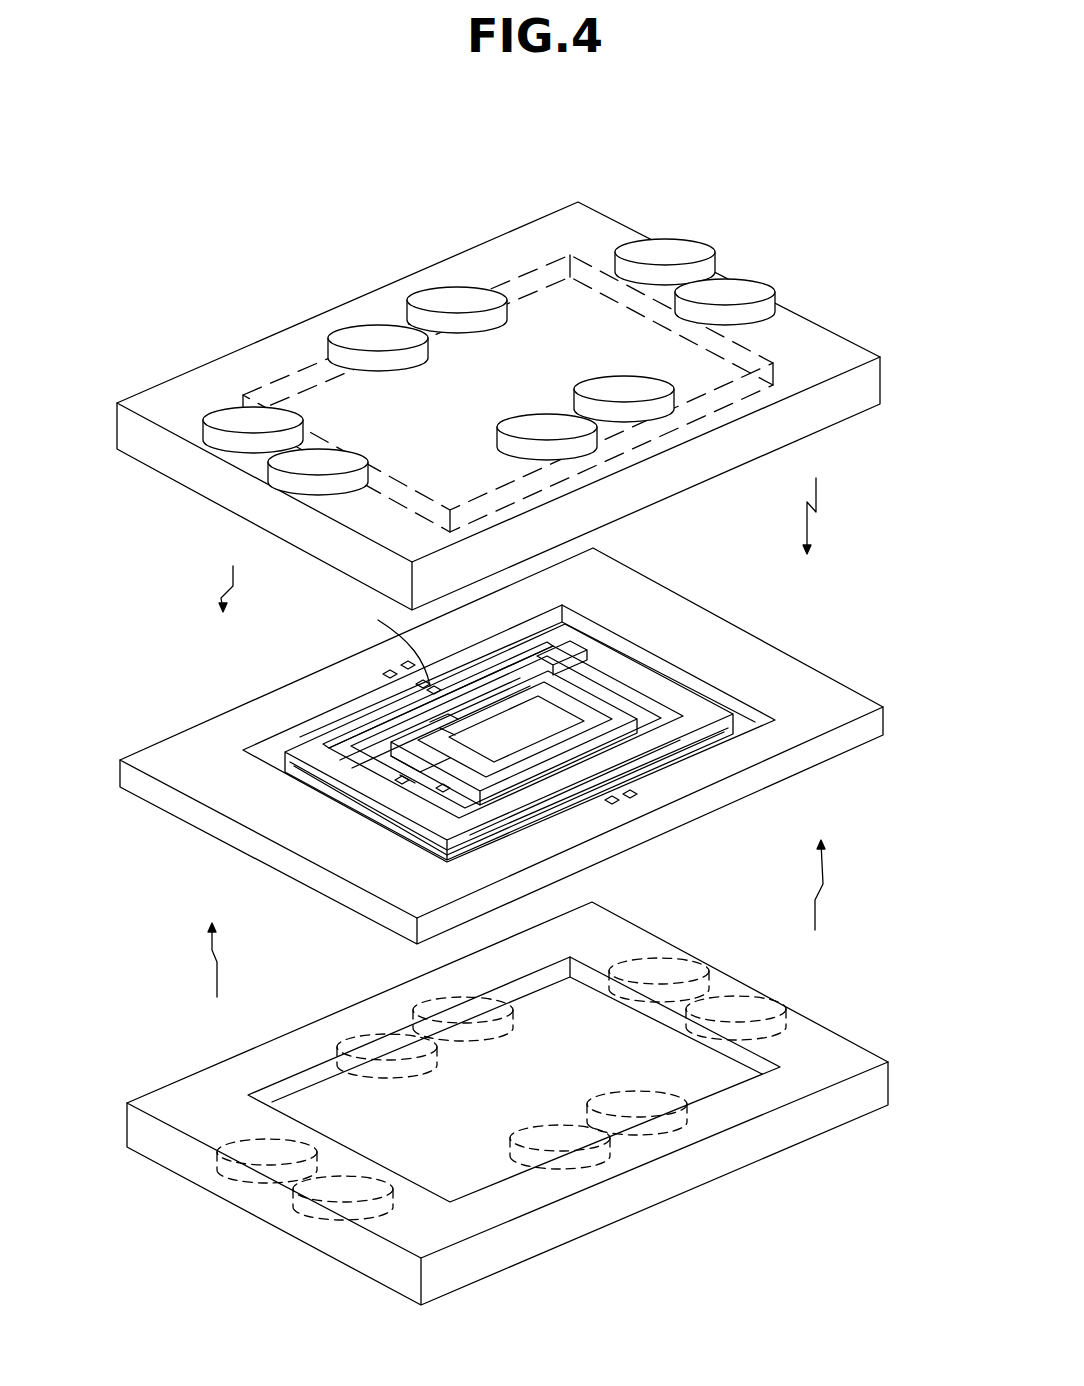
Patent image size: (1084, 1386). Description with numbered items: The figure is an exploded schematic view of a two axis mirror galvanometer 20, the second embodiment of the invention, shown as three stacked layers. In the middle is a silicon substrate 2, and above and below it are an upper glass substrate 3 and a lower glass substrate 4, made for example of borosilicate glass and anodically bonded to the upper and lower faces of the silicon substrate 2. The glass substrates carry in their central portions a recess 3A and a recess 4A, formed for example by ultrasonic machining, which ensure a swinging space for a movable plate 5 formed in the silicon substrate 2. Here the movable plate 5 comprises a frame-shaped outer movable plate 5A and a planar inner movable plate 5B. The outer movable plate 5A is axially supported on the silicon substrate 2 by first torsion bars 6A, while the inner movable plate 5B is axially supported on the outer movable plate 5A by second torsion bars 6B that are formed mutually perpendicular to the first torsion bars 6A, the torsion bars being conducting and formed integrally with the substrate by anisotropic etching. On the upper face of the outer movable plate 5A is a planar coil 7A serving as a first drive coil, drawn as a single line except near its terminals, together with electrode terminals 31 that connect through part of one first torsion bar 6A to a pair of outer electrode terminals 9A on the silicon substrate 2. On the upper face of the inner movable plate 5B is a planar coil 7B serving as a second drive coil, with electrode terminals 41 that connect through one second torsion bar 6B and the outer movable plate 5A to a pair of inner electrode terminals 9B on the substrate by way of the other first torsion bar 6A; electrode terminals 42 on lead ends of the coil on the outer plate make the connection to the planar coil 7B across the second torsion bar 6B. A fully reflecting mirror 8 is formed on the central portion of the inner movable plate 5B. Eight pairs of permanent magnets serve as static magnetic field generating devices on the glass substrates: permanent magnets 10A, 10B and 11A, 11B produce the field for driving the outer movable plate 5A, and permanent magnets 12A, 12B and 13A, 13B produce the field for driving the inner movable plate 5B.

The silicon substrate 2 is at (836, 697).
The upper glass substrate 3 is at (830, 346).
The recess 3A is at (735, 378).
The lower glass substrate 4 is at (853, 1050).
The recess 4A is at (752, 1085).
The movable plate 5 is at (592, 722).
The outer movable plate 5A is at (695, 713).
The inner movable plate 5B is at (697, 712).
The first torsion bars 6A is at (398, 688).
The second torsion bars 6B is at (605, 690).
The planar coil 7A is at (310, 793).
The planar coil 7B is at (667, 737).
The fully reflecting mirror 8 is at (440, 728).
The outer electrode terminals 9A is at (403, 662).
The inner electrode terminals 9B is at (645, 808).
The permanent magnet 10A is at (283, 483).
The permanent magnet 10B is at (300, 1208).
The permanent magnet 11A is at (690, 260).
The permanent magnet 11B is at (717, 968).
The permanent magnet 12A is at (440, 296).
The permanent magnet 12B is at (428, 1070).
The permanent magnet 13A is at (602, 392).
The permanent magnet 13B is at (595, 1118).
The two axis mirror galvanometer 20 is at (176, 624).
The electrode terminals 31 is at (567, 727).
The electrode terminals 41 is at (468, 735).
The electrode terminals 42 is at (387, 795).